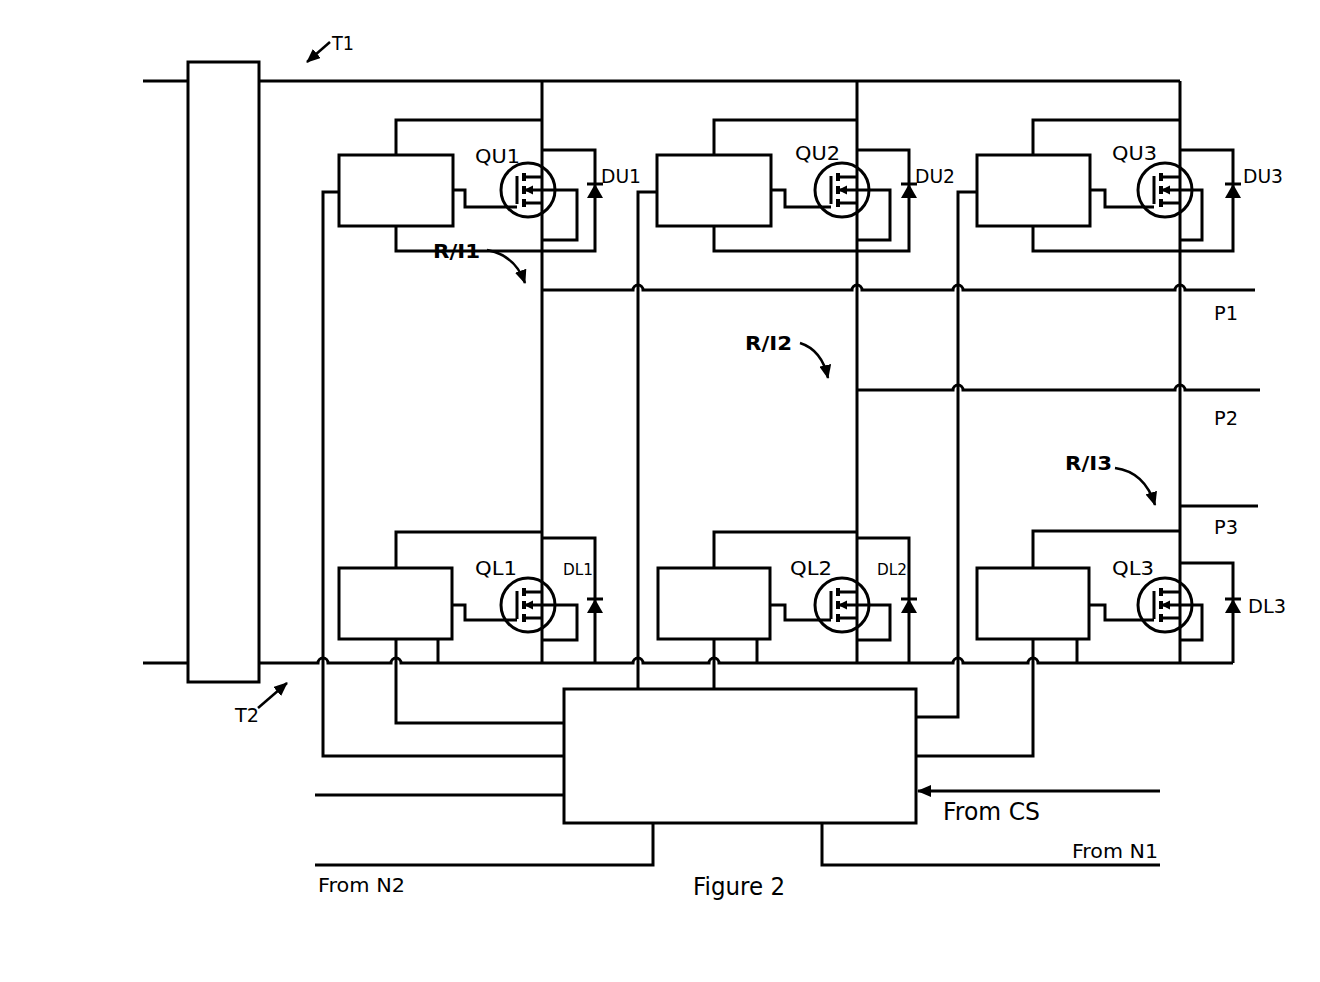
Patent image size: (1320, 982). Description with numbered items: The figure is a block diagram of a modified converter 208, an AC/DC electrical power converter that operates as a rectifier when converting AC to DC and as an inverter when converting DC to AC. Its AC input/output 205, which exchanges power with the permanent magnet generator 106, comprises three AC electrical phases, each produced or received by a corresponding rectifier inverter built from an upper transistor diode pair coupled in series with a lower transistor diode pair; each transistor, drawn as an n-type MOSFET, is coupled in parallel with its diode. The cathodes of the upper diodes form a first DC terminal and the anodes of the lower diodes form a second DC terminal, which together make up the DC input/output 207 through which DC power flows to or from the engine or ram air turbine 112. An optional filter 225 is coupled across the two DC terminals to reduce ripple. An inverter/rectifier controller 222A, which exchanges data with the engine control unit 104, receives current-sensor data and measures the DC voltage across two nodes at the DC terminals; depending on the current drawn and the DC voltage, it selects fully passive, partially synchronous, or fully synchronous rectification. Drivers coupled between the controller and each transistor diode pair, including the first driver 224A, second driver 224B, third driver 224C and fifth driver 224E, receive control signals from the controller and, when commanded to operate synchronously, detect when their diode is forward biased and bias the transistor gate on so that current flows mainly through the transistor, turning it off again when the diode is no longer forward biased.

The modified converter 208 is at (902, 63).
The filter 225 is at (223, 372).
The first driver 224A is at (396, 190).
The second driver 224B is at (395, 603).
The third driver 224C is at (714, 190).
The fifth driver 224E is at (1033, 603).
The inverter/rectifier controller 222A is at (740, 756).
The AC input/output 205 is at (1230, 268).
The DC input/output 207 is at (178, 700).
The engine or ram air turbine 112 is at (157, 389).
The permanent magnet generator 106 is at (1284, 398).
The engine control unit 104 is at (439, 813).